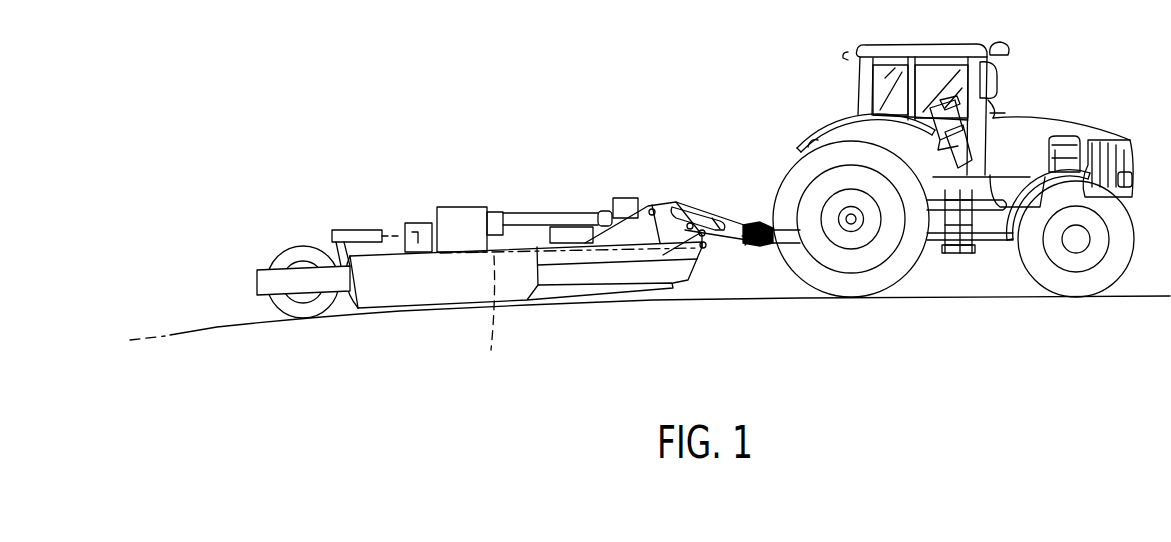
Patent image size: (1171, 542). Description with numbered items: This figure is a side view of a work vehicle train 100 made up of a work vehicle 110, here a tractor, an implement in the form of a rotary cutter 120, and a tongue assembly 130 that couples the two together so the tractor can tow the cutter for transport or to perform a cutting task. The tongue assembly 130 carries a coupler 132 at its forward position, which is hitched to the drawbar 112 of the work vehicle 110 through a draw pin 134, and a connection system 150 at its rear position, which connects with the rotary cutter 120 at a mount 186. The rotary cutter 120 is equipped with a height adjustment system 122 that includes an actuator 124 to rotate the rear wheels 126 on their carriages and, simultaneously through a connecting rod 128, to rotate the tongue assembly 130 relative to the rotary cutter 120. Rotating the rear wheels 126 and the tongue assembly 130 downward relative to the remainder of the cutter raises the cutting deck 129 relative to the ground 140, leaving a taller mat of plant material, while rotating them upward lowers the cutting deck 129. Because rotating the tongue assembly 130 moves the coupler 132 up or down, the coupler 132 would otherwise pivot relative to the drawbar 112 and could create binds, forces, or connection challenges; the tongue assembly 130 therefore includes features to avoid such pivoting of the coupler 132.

The work vehicle train 100 is at (492, 93).
The work vehicle 110 is at (1056, 113).
The drawbar 112 is at (773, 243).
The rotary cutter 120 is at (453, 205).
The height adjustment system 122 is at (388, 260).
The actuator 124 is at (357, 228).
The rear wheels 126 is at (285, 258).
The connecting rod 128 is at (497, 319).
The cutting deck 129 is at (703, 233).
The tongue assembly 130 is at (714, 203).
The coupler 132 is at (748, 224).
The draw pin 134 is at (757, 247).
The ground 140 is at (217, 327).
The connection system 150 is at (670, 202).
The mount 186 is at (675, 219).